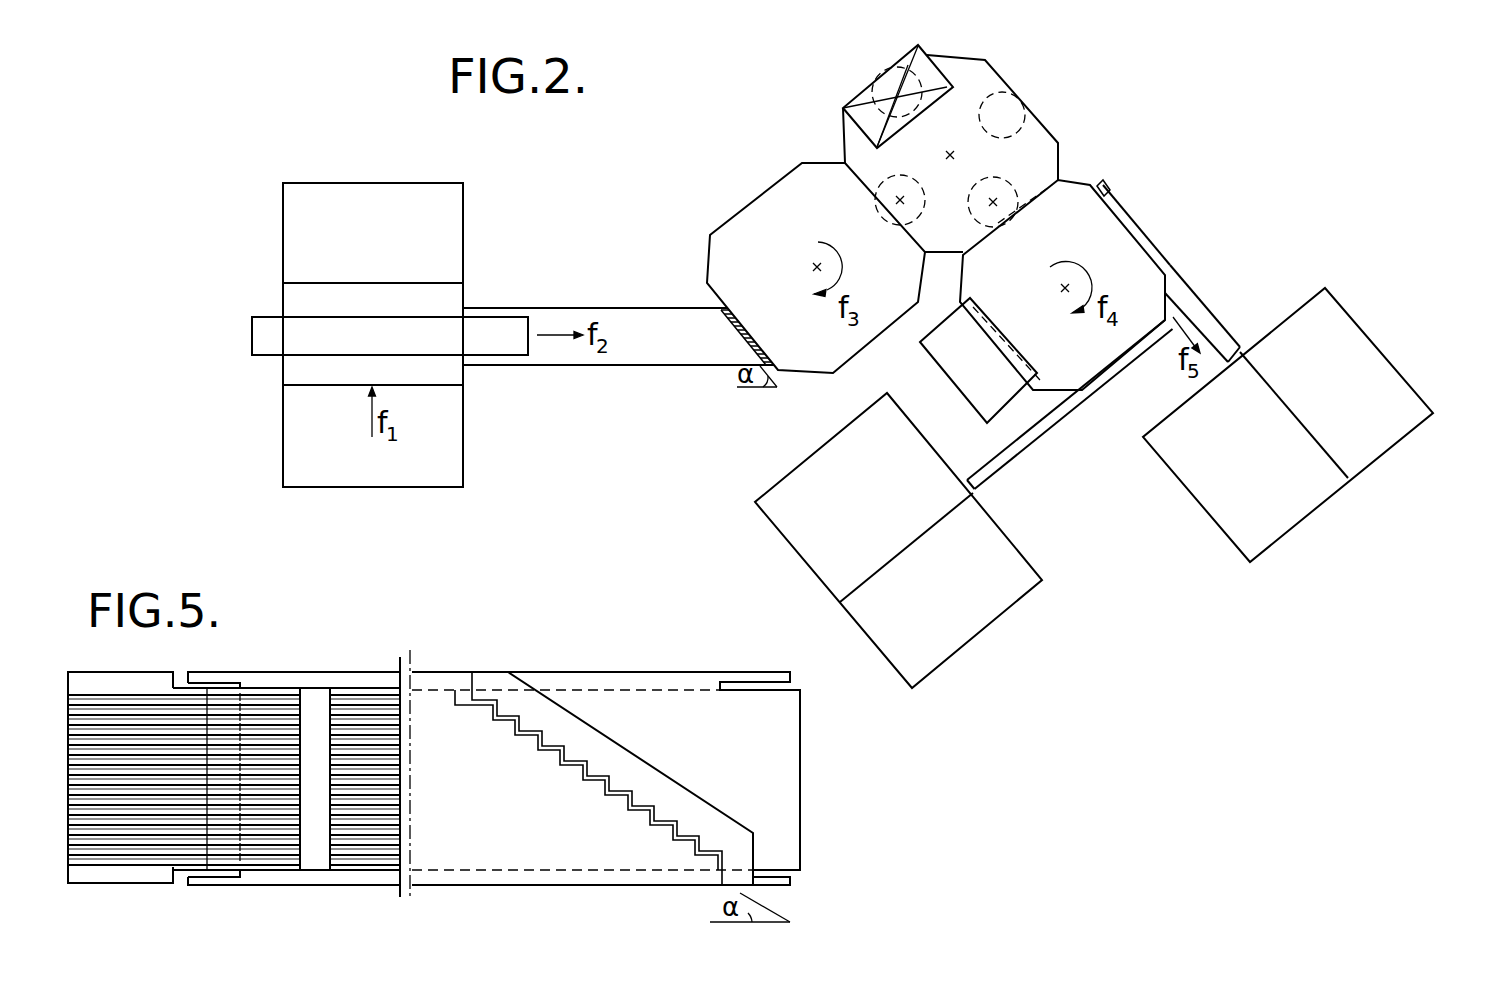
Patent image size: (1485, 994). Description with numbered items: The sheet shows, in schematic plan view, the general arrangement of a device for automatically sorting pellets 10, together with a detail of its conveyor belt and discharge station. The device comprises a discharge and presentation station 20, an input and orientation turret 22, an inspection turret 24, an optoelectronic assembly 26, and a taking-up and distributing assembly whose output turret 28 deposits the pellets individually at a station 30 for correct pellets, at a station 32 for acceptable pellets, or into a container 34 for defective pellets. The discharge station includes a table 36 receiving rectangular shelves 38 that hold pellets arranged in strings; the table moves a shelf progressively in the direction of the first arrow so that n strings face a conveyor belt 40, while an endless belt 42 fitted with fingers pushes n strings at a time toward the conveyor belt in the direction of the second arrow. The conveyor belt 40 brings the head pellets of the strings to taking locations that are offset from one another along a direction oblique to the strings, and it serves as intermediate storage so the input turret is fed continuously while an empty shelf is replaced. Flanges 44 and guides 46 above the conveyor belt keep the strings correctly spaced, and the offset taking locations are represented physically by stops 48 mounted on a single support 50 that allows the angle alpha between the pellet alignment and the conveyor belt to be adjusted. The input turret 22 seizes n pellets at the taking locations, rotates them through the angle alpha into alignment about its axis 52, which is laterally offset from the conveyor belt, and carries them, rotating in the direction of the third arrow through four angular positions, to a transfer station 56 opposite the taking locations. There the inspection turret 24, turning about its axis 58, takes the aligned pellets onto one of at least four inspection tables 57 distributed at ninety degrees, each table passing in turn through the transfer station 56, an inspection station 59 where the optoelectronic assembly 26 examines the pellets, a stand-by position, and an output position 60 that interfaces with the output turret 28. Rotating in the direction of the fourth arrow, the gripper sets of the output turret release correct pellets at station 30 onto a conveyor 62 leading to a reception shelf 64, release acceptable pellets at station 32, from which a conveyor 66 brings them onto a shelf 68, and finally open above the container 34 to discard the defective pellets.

In FIG. 2, the pellets 10 is at (740, 327).
In FIG. 2, the discharge and presentation station 20 is at (589, 302).
In FIG. 2, the input and orientation turret 22 is at (758, 182).
In FIG. 2, the inspection turret 24 is at (1046, 114).
In FIG. 2, the optoelectronic assembly 26 is at (834, 100).
In FIG. 2, the output turret 28 is at (1116, 191).
In FIG. 2, the station for receiving correct pellets 30 is at (1137, 227).
In FIG. 2, the station for receiving acceptable pellets 32 is at (1115, 360).
In FIG. 2, the container for receiving defective pellets 34 is at (947, 357).
In FIG. 2, the table 36 is at (447, 437).
In FIG. 2, the rectangular shelves 38 is at (305, 373).
In FIG. 2, the conveyor belt 40 is at (610, 350).
In FIG. 5, the conveyor belt 40 is at (258, 697).
In FIG. 2, the endless belt 42 is at (498, 338).
In FIG. 5, the flanges 44 is at (368, 682).
In FIG. 5, the guides 46 is at (238, 838).
In FIG. 5, the stops 48 is at (618, 808).
In FIG. 5, the support 50 is at (690, 810).
In FIG. 2, the axis of the turret 52 is at (815, 267).
In FIG. 2, the transfer station 56 is at (900, 200).
In FIG. 2, the inspection tables 57 is at (867, 92).
In FIG. 2, the axis of the inspection turret 58 is at (950, 155).
In FIG. 2, the inspection station 59 is at (908, 56).
In FIG. 2, the output position 60 is at (993, 202).
In FIG. 2, the conveyor 62 is at (1190, 307).
In FIG. 2, the reception shelf 64 is at (1293, 333).
In FIG. 2, the conveyor 66 is at (1043, 425).
In FIG. 2, the shelf 68 is at (982, 537).